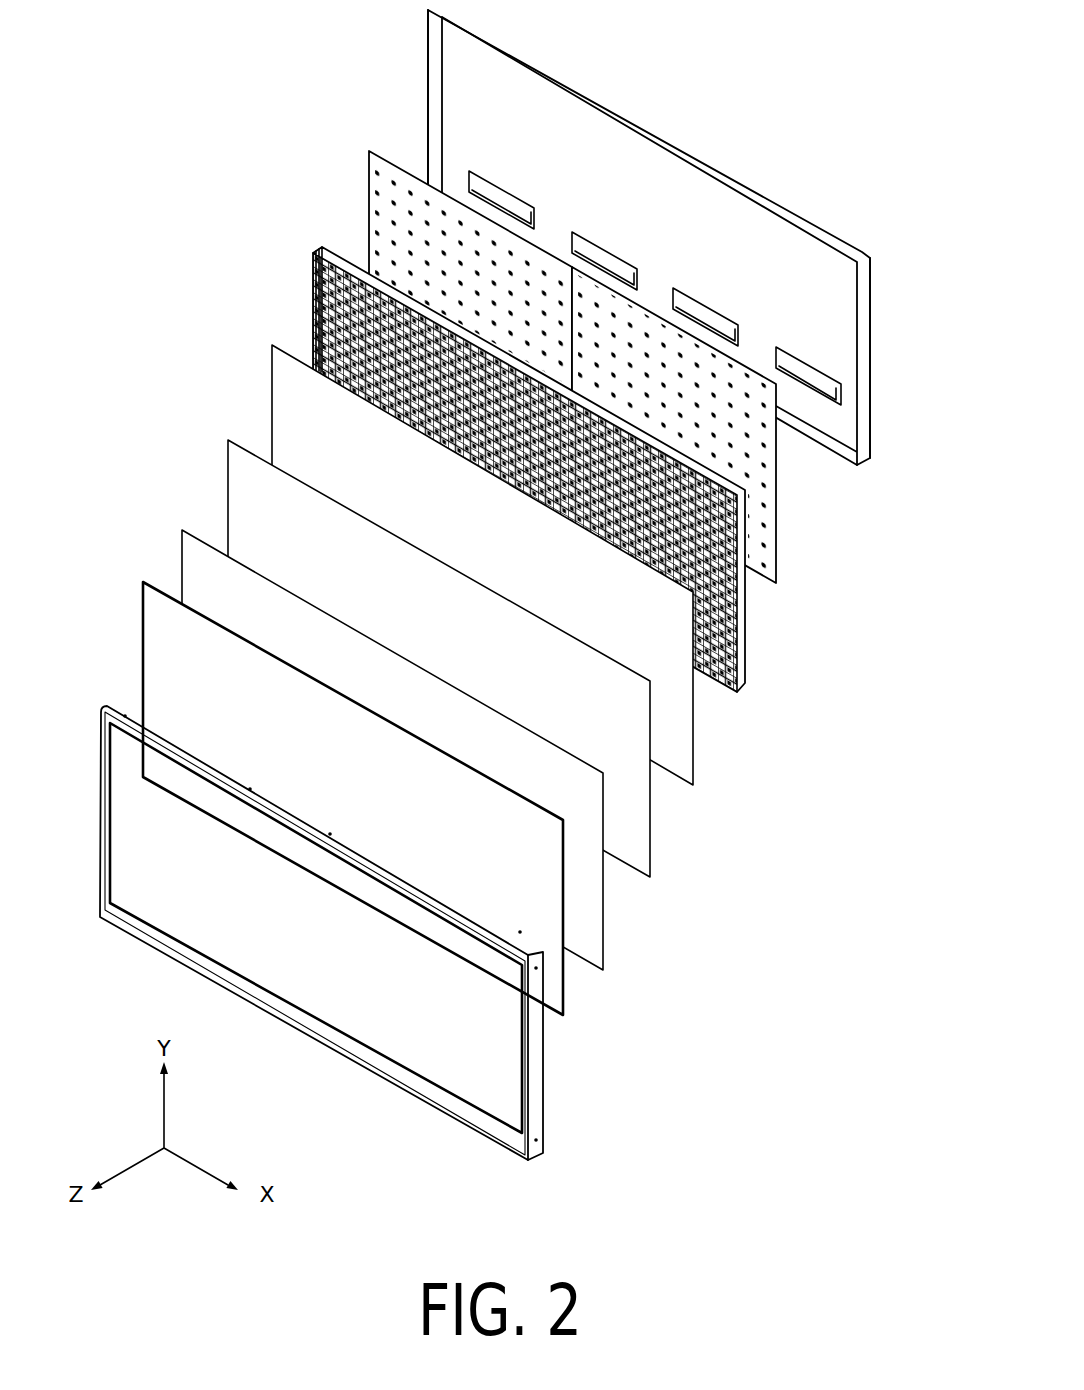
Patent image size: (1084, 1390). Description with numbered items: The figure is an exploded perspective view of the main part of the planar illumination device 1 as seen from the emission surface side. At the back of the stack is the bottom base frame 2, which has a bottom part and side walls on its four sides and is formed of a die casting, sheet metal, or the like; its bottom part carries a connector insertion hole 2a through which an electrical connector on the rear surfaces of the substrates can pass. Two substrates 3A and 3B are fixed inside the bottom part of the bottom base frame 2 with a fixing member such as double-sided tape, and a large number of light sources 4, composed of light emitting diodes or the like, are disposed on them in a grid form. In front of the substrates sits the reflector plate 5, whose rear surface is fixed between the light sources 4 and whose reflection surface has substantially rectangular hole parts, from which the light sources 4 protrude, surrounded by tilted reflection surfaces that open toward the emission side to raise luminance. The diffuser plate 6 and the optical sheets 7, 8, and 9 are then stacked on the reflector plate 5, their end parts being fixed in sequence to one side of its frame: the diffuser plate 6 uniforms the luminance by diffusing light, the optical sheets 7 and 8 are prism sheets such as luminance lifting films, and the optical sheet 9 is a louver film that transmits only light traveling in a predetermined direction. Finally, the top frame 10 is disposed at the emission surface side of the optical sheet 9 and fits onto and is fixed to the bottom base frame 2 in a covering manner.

The planar illumination device 1 is at (181, 150).
The bottom base frame 2 is at (681, 237).
The connector insertion hole 2a is at (828, 376).
The substrate 3A is at (369, 205).
The substrate 3B is at (777, 500).
The light source 4 is at (377, 173).
The reflector plate 5 is at (746, 632).
The diffuser plate 6 is at (694, 724).
The optical sheet 7 is at (651, 824).
The optical sheet 8 is at (604, 918).
The optical sheet 9 is at (564, 988).
The top frame 10 is at (544, 1090).